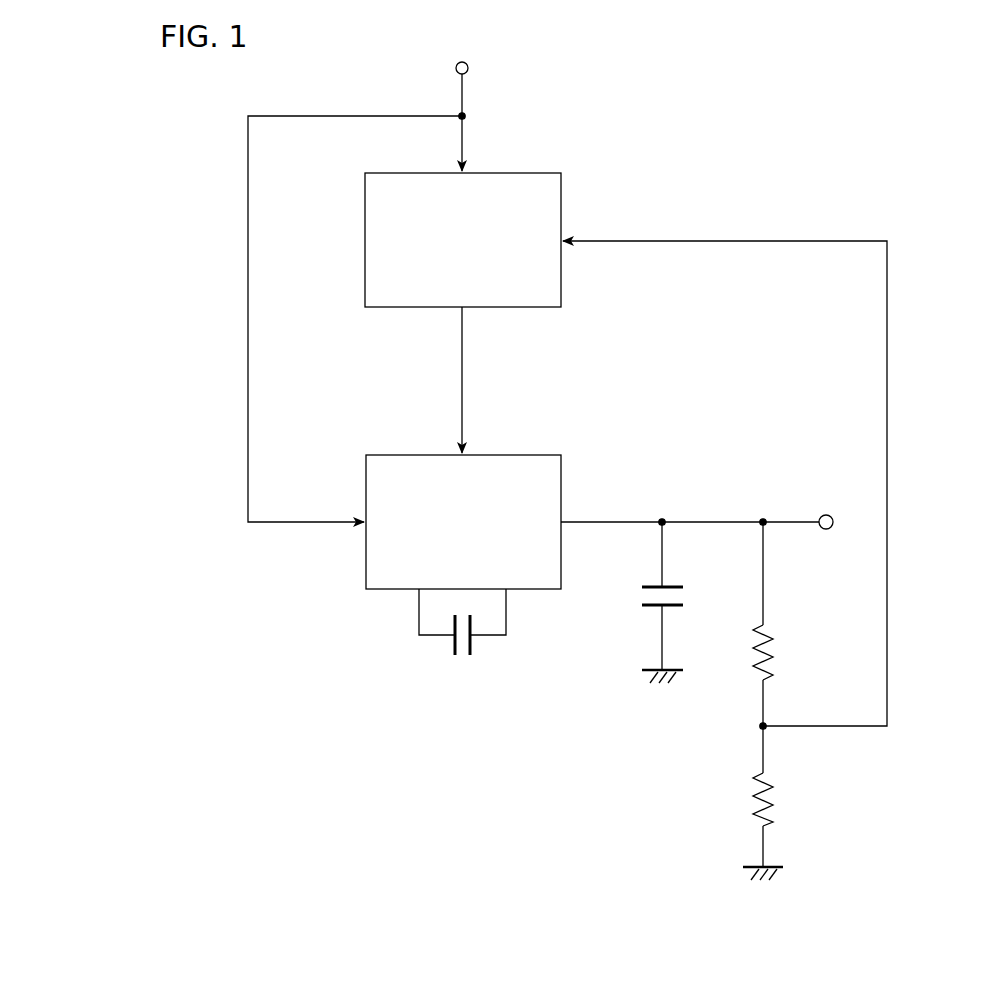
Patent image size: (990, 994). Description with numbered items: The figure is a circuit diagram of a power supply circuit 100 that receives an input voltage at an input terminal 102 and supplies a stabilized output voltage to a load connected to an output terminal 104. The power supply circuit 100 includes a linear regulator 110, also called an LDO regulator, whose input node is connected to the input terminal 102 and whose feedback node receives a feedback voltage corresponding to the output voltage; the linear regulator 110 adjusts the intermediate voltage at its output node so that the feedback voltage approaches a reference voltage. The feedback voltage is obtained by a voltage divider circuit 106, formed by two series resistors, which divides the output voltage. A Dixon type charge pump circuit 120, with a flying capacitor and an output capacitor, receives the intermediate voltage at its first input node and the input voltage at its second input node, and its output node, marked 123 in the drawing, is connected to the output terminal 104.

The power supply circuit 100 is at (980, 72).
The input terminal 102 is at (469, 66).
The output terminal 104 is at (826, 514).
The voltage divider circuit 106 is at (806, 887).
The linear regulator 110 is at (530, 172).
The charge pump circuit 120 is at (530, 454).
The charge pump output 123 is at (563, 518).